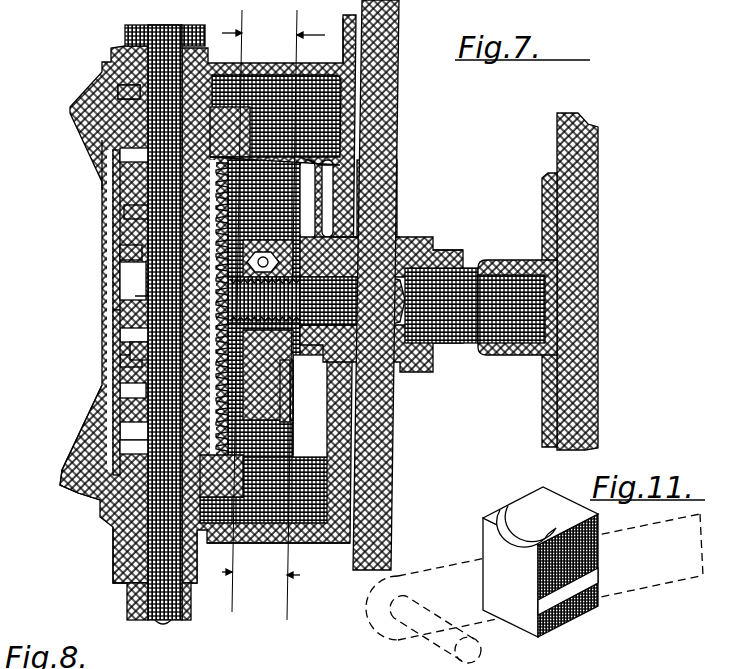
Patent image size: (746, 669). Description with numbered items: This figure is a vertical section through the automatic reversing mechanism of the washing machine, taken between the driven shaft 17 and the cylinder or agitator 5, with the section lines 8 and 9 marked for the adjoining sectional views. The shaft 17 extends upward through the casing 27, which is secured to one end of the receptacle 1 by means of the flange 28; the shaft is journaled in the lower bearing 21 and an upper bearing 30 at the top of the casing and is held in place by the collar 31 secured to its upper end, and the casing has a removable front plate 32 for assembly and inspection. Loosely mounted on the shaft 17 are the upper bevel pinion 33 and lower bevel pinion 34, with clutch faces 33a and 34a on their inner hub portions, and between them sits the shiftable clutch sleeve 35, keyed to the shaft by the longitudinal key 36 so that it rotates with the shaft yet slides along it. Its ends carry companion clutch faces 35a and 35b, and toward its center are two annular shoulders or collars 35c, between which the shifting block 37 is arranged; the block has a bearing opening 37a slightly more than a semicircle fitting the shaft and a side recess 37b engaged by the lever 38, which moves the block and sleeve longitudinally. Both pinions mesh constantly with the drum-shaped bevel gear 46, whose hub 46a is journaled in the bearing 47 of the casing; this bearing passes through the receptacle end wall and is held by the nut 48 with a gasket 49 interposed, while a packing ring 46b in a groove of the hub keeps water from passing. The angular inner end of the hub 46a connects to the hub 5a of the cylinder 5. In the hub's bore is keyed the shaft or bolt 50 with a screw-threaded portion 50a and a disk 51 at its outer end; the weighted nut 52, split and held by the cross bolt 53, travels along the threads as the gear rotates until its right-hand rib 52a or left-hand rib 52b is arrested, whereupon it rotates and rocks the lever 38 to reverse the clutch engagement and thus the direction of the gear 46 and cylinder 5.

In FIG. 7, the receptacle 1 is at (400, 32).
In FIG. 7, the cylinder or agitator 5 is at (597, 240).
In FIG. 7, the hub of cylinder or agitator 5a is at (533, 353).
In FIG. 7, the section line 8- 8 is at (227, 311).
In FIG. 7, the section line 9- 9 is at (306, 315).
In FIG. 7, the driven shaft 17 is at (150, 577).
In FIG. 7, the lower bearing 21 is at (113, 550).
In FIG. 7, the casing 27 is at (265, 533).
In FIG. 7, the flange 28 is at (347, 20).
In FIG. 7, the upper bearing 30 is at (125, 58).
In FIG. 7, the collar 31 is at (160, 28).
In FIG. 7, the removable front plate 32 is at (103, 150).
In FIG. 7, the upper bevel pinion 33 is at (108, 118).
In FIG. 7, the clutch face of upper pinion 33a is at (112, 185).
In FIG. 7, the lower bevel pinion 34 is at (77, 490).
In FIG. 7, the clutch face of lower pinion 34a is at (117, 433).
In FIG. 7, the shiftable clutch sleeve 35 is at (133, 380).
In FIG. 7, the upper clutch face of sleeve 35a is at (120, 208).
In FIG. 7, the lower clutch face of sleeve 35b is at (112, 420).
In FIG. 7, the annular shoulders or collars 35c is at (120, 250).
In FIG. 7, the longitudinal key 36 is at (122, 263).
In FIG. 7, the shifting block 37 is at (187, 342).
In FIG. 11, the shifting block 37 is at (485, 530).
In FIG. 11, the longitudinal bearing opening 37a is at (522, 512).
In FIG. 7, the side recess 37b is at (118, 330).
In FIG. 11, the side recess 37b is at (548, 610).
In FIG. 7, the lever 38 is at (135, 297).
In FIG. 11, the lever 38 is at (377, 625).
In FIG. 7, the drum-shaped bevel gear 46 is at (345, 170).
In FIG. 7, the hub of bevel gear 46a is at (398, 242).
In FIG. 7, the packing ring 46b is at (460, 353).
In FIG. 7, the bearing 47 is at (430, 373).
In FIG. 7, the nut 48 is at (455, 255).
In FIG. 7, the gasket 49 is at (425, 240).
In FIG. 7, the shaft or bolt 50 is at (405, 380).
In FIG. 7, the screw-threaded portion 50a is at (335, 235).
In FIG. 7, the disk 51 is at (213, 347).
In FIG. 7, the nut 52 is at (270, 242).
In FIG. 7, the right-hand side rib 52a is at (286, 390).
In FIG. 7, the left-hand side rib 52b is at (300, 400).
In FIG. 7, the cross bolt 53 is at (272, 262).